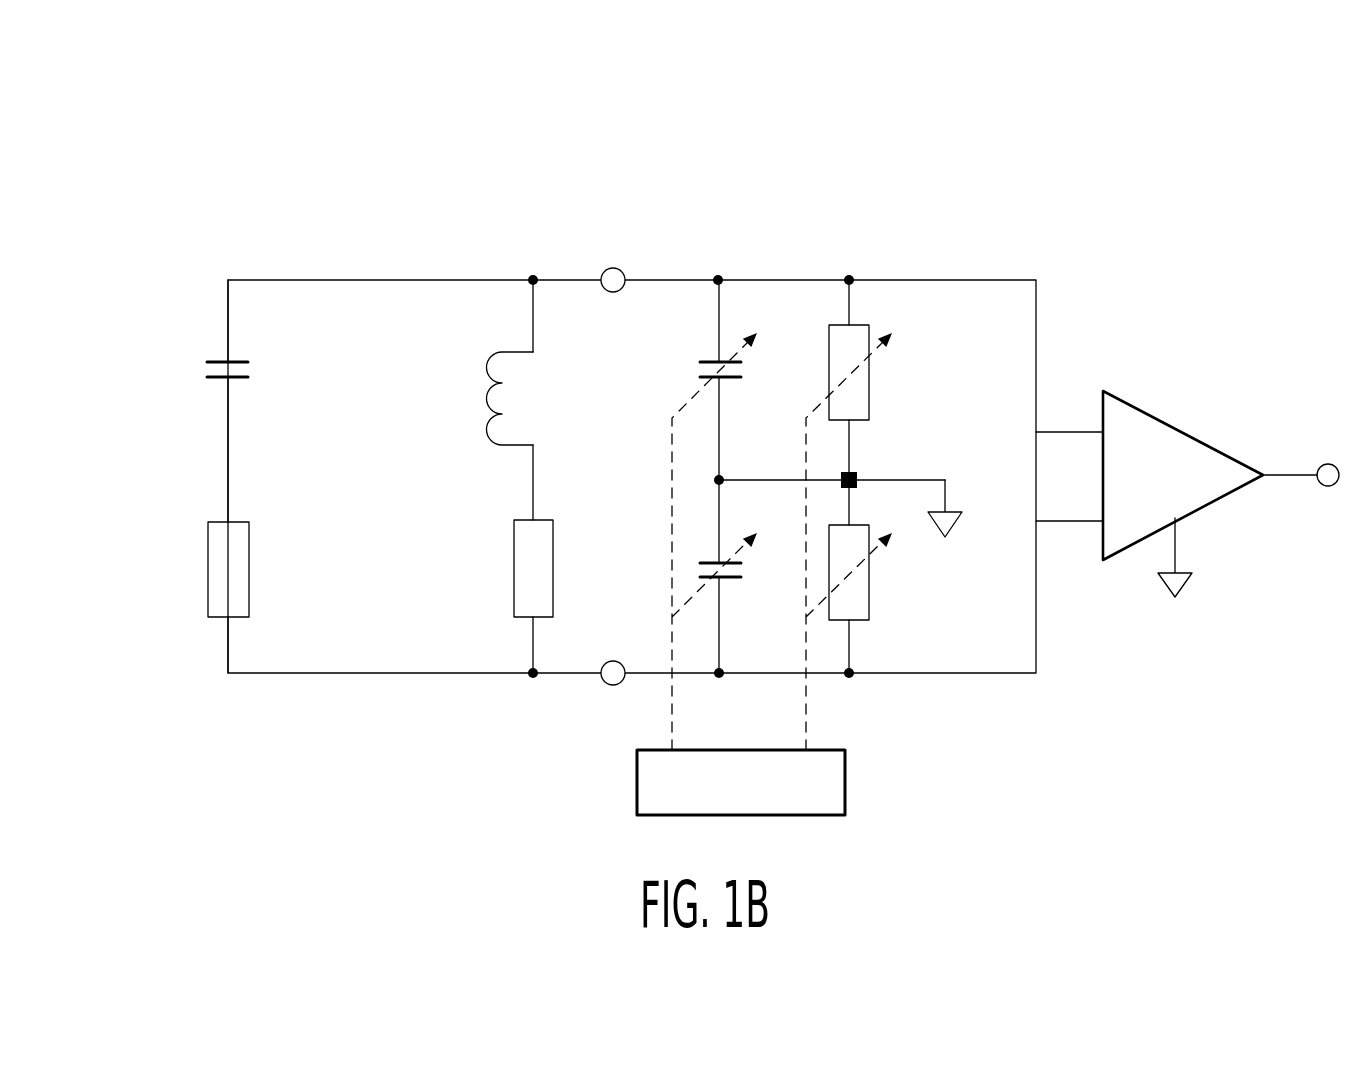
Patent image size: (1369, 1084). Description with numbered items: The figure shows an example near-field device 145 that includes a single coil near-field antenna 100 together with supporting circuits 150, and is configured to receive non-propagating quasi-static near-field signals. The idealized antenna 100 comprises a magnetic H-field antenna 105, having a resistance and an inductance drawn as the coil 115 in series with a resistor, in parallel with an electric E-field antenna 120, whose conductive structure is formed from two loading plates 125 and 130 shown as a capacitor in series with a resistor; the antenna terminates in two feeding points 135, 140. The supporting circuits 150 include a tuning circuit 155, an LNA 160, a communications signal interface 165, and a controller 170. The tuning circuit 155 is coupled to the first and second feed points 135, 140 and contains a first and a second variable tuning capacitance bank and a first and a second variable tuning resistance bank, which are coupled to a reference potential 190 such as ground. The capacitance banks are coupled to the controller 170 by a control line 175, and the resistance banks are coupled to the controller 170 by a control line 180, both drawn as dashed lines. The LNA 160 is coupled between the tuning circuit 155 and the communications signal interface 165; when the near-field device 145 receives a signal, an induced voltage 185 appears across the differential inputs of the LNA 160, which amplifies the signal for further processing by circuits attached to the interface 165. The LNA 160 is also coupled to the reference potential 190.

The near-field device 145 is at (131, 150).
The single coil near-field antenna 100 is at (645, 141).
The supporting circuits 150 is at (1305, 141).
The electric (E-field) antenna 120 is at (357, 270).
The magnetic (H-field) antenna 105 is at (613, 270).
The tuning circuit 155 is at (875, 270).
The loading plate 125 is at (243, 361).
The loading plate 130 is at (238, 380).
The inductor L1 115 is at (503, 397).
The first feeding point 135 is at (615, 293).
The second feeding point 140 is at (614, 661).
The control line 175 is at (672, 470).
The control line 180 is at (806, 430).
The induced voltage (Vlna) 185 is at (1015, 458).
The reference potential 190 is at (946, 538).
The LNA (low noise amplifier) 160 is at (1170, 420).
The communications signal interface 165 is at (1328, 463).
The controller 170 is at (637, 783).